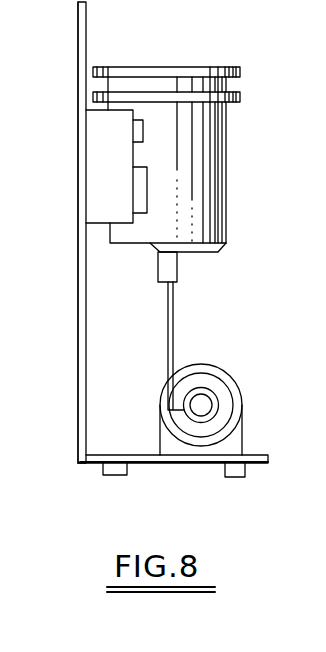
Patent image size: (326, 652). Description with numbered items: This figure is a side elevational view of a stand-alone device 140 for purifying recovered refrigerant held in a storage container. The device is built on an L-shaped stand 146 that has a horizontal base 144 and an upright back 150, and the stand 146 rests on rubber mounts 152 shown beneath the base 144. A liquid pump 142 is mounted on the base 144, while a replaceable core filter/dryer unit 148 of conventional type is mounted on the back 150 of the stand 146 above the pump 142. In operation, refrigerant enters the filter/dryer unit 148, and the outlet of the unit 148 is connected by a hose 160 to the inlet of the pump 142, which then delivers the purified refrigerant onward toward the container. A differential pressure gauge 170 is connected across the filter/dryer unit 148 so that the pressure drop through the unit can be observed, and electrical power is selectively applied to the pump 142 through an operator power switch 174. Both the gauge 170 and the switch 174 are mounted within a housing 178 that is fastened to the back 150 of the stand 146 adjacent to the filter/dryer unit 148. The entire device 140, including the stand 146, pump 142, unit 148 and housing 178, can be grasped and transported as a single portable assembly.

The stand-alone device 140 is at (206, 33).
The liquid pump 142 is at (240, 390).
The base 144 is at (256, 455).
The L-shaped stand 146 is at (80, 354).
The replaceable core filter/dryer unit 148 is at (227, 180).
The back 150 is at (78, 283).
The rubber mounts 152 is at (228, 478).
The hose 160 is at (175, 318).
The differential pressure gauge 170 is at (148, 192).
The operator power switch 174 is at (140, 116).
The housing 178 is at (95, 168).